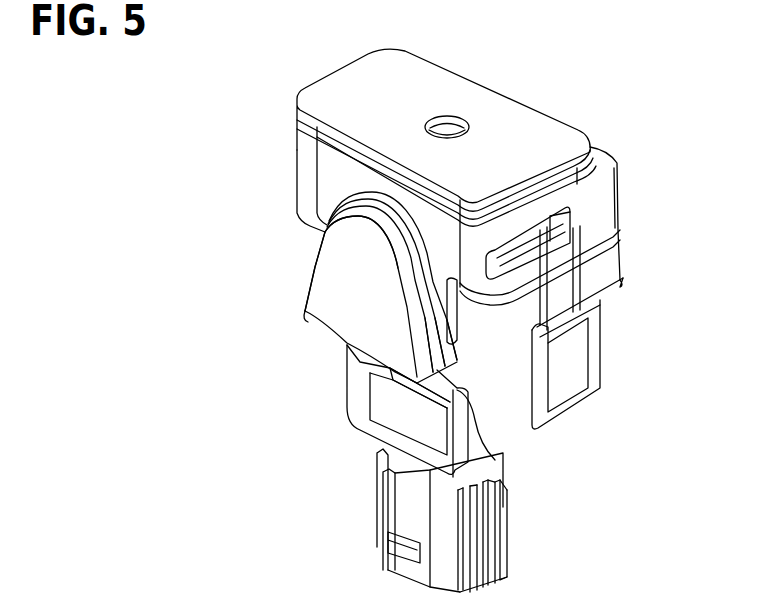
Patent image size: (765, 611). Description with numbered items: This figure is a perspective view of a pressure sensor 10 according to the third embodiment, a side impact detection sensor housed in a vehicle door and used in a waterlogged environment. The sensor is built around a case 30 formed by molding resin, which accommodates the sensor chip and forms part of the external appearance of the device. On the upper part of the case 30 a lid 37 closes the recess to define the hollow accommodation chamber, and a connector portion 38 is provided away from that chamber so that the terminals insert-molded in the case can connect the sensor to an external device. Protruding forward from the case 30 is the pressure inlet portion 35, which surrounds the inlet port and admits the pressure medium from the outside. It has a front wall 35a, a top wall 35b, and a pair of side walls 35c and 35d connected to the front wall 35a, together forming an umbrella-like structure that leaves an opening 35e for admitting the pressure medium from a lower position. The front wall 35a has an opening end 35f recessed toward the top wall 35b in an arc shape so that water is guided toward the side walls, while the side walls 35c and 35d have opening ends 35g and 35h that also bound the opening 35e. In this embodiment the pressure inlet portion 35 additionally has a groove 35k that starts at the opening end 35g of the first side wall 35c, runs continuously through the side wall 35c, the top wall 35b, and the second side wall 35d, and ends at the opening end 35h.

The pressure sensor 10 is at (528, 100).
The lid 37 is at (553, 137).
The case 30 is at (602, 193).
The pressure inlet portion 35 is at (413, 304).
The front wall 35a is at (341, 237).
The top wall 35b is at (340, 169).
The side wall 35c is at (308, 283).
The side wall 35d is at (447, 320).
The opening 35e is at (358, 348).
The opening end 35f is at (338, 345).
The opening end 35g is at (306, 329).
The opening end 35h is at (478, 424).
The groove 35k is at (368, 247).
The connector portion 38 is at (507, 513).